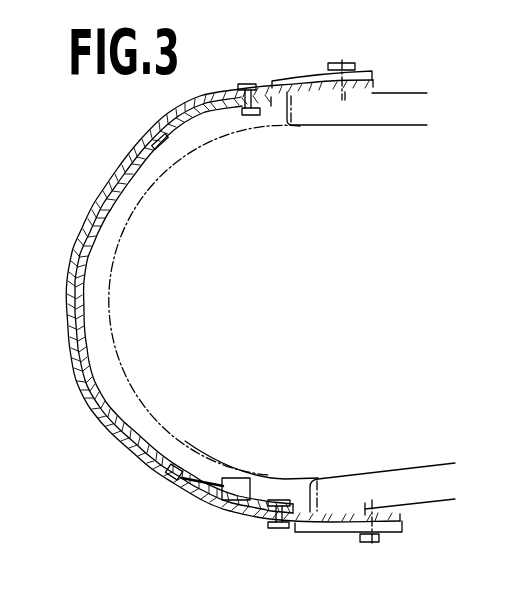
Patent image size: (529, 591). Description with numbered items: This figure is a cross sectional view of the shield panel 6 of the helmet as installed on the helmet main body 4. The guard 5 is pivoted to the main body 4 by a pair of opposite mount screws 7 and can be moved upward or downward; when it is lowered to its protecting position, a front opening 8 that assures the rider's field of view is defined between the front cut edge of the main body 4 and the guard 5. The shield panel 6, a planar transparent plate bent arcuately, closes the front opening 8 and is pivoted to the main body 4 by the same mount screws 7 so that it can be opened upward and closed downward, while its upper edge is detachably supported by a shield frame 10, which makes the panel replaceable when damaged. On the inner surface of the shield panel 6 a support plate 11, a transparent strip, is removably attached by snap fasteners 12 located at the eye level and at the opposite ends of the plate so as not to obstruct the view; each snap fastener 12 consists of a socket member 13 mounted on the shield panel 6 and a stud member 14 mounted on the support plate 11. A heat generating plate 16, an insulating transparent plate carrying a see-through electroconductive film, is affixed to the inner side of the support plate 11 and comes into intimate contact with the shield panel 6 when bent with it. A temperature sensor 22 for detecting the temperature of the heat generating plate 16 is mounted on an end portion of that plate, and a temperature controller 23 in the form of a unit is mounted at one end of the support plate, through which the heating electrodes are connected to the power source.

The helmet main body 4 is at (430, 93).
The guard 5 is at (167, 434).
The shield panel 6 is at (120, 160).
The mount screws 7 is at (322, 75).
The front opening 8 is at (119, 370).
The shield frame 10 is at (372, 78).
The support plate 11 is at (76, 262).
The snap fasteners 12 is at (250, 77).
The socket member 13 is at (240, 86).
The stud member 14 is at (263, 110).
The heat generating plate 16 is at (80, 307).
The temperature sensor 22 is at (175, 468).
The temperature controller 23 is at (242, 478).